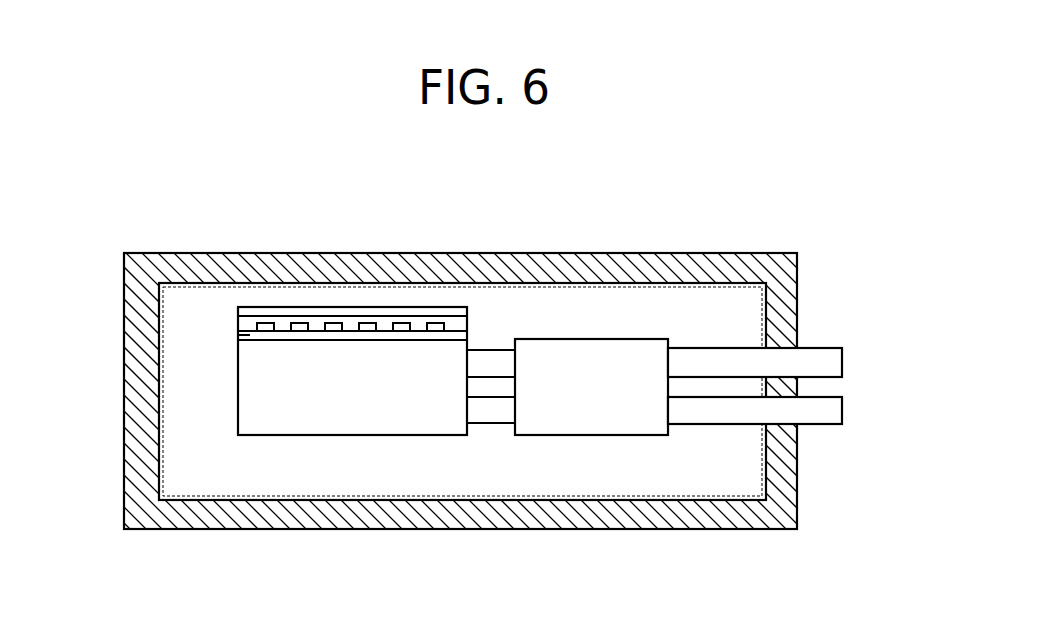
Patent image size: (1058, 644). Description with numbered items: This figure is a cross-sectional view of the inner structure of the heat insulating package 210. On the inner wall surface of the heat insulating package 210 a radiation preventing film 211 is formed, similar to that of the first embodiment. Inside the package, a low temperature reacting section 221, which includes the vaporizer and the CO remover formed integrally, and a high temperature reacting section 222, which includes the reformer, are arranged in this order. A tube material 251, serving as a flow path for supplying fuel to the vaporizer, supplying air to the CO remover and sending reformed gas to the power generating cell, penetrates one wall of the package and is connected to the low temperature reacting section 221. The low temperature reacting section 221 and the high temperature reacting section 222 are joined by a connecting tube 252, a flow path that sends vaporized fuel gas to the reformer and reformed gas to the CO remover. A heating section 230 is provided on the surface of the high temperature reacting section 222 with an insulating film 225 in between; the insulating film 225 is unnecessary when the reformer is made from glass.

The heat insulating package 210 is at (580, 272).
The radiation preventing film 211 is at (677, 287).
The low temperature reacting section 221 is at (607, 422).
The high temperature reacting section 222 is at (298, 422).
The insulating film 225 is at (250, 335).
The heating section 230 is at (397, 305).
The tube material 251 is at (843, 361).
The connecting tube 252 is at (488, 365).